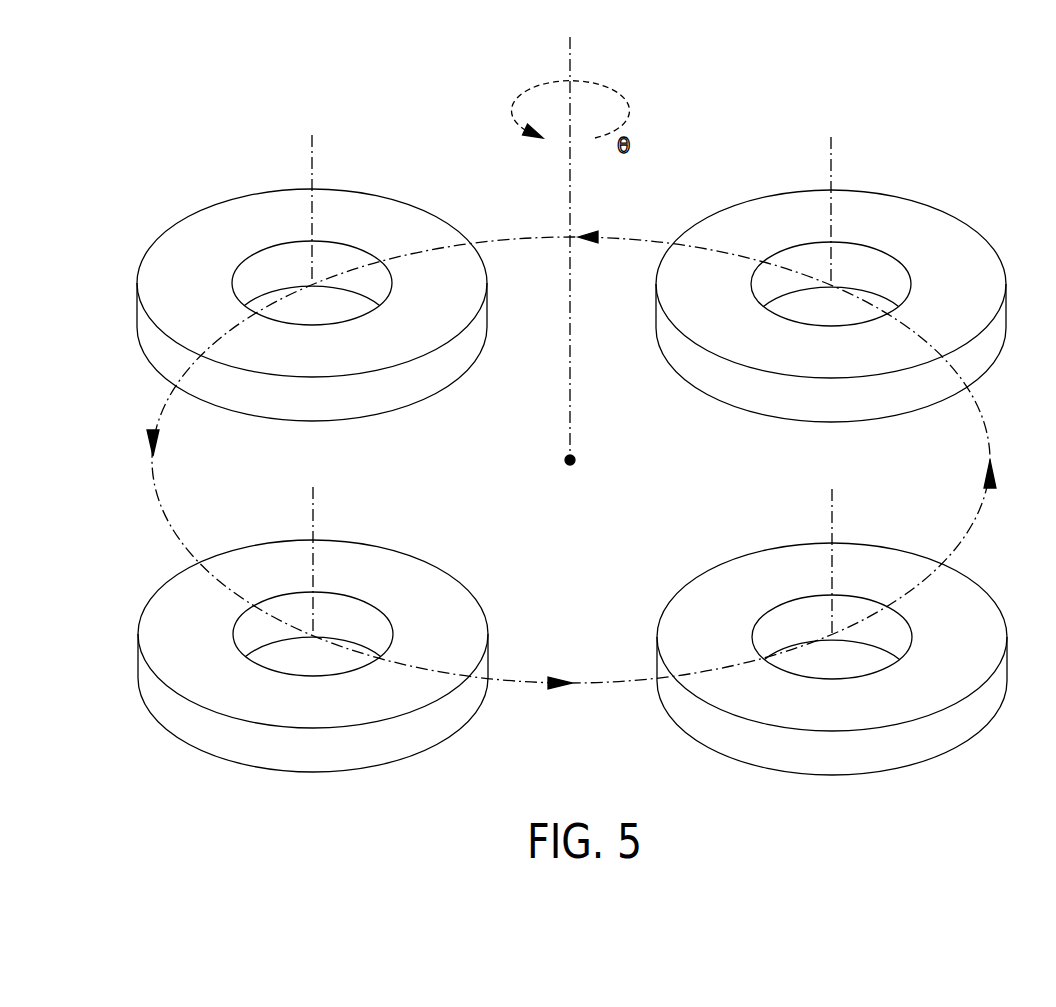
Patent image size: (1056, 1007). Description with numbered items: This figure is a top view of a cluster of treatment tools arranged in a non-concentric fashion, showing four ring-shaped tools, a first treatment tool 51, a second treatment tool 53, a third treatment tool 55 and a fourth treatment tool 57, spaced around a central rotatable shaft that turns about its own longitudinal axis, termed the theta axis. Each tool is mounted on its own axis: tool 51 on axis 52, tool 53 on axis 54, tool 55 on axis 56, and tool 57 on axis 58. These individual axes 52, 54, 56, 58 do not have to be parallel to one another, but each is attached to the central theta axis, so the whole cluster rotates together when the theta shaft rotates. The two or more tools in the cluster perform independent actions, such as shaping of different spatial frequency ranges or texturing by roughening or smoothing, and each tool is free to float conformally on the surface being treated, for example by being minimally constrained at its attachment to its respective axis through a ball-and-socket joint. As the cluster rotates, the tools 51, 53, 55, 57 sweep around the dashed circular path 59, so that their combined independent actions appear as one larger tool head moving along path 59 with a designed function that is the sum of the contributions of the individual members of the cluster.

The treatment tool 51 is at (195, 246).
The axis 52 is at (313, 162).
The treatment tool 53 is at (195, 598).
The axis 54 is at (313, 513).
The treatment tool 55 is at (715, 603).
The axis 56 is at (832, 515).
The treatment tool 57 is at (713, 230).
The axis 58 is at (831, 163).
The path 59 is at (983, 415).